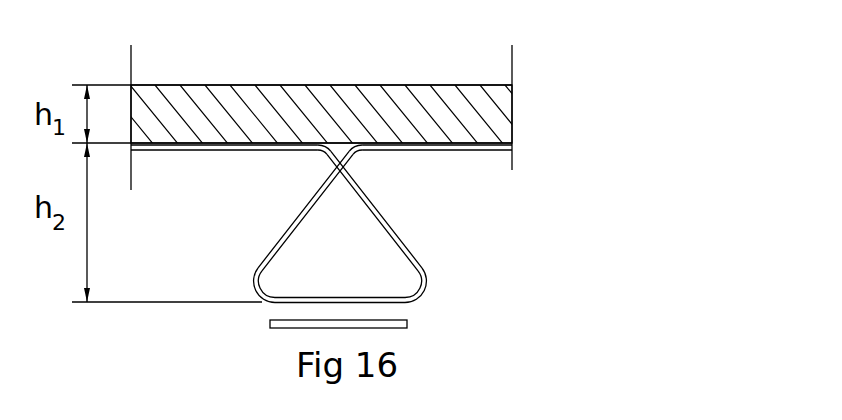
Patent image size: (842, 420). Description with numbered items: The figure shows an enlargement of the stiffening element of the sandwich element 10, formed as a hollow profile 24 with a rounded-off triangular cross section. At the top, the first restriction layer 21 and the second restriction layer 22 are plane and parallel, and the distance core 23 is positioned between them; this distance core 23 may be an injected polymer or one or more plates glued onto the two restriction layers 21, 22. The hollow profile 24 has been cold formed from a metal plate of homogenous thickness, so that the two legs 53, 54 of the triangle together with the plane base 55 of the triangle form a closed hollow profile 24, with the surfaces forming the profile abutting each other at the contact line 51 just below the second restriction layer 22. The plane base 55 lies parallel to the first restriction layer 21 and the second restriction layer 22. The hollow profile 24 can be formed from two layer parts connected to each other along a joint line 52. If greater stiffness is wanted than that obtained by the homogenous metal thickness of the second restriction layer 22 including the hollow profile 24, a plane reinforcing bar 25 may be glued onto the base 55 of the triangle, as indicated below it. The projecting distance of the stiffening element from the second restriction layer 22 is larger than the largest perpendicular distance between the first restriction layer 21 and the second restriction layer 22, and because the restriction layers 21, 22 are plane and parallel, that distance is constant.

The assembly 10 is at (270, 67).
The first restriction layer 21 is at (176, 86).
The second restriction layer 22 is at (200, 149).
The distance core 23 is at (487, 107).
The hollow profile 24 is at (420, 218).
The plane reinforcing bar 25 is at (292, 325).
The contact line 51 is at (339, 162).
The joint line 52 is at (338, 294).
The leg of the triangle 53 is at (300, 217).
The leg of the triangle 54 is at (380, 214).
The plane base of the triangle 55 is at (402, 303).